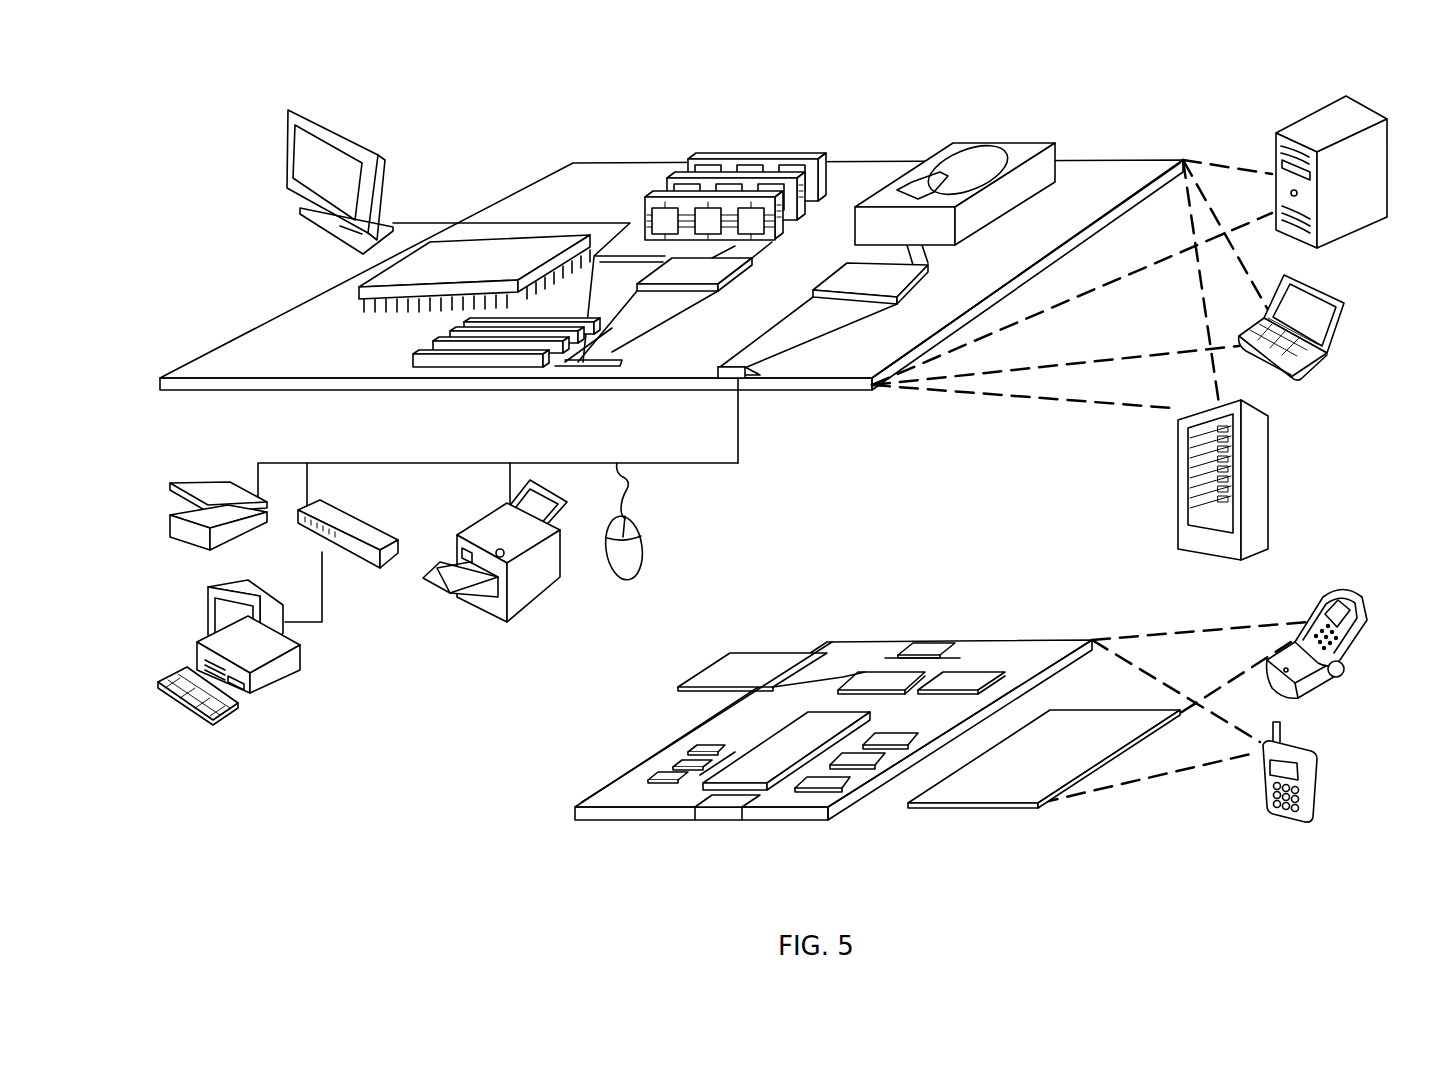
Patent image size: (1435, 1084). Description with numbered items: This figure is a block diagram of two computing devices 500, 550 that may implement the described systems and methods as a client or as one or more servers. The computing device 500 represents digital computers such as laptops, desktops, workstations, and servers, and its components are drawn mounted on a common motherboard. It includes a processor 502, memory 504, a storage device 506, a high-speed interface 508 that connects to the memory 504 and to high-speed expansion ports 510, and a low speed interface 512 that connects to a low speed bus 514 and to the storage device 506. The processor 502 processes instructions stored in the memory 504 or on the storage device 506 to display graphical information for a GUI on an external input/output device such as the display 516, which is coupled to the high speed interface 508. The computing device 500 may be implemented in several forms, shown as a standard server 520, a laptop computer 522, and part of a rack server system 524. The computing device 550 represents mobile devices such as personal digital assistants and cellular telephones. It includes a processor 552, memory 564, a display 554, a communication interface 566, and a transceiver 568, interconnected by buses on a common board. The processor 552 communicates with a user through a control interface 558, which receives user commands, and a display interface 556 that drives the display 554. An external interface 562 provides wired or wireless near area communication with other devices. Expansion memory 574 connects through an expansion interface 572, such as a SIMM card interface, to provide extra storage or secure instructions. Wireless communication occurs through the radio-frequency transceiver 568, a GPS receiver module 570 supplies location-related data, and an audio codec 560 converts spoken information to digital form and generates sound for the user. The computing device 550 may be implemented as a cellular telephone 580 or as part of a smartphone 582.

The computing device 500 is at (486, 133).
The processor 502 is at (362, 288).
The memory 504 is at (700, 160).
The storage device 506 is at (945, 143).
The high-speed interface 508 is at (672, 272).
The high-speed expansion ports 510 is at (425, 352).
The low speed interface 512 is at (853, 278).
The low speed bus 514 is at (757, 380).
The display 516 is at (292, 112).
The standard server 520 is at (1275, 147).
The laptop computer 522 is at (1345, 291).
The rack server system 524 is at (1176, 503).
The computing device 550 is at (550, 824).
The processor 552 is at (758, 775).
The display 554 is at (1005, 802).
The display interface 556 is at (827, 780).
The control interface 558 is at (862, 757).
The audio codec 560 is at (888, 737).
The external interface 562 is at (721, 820).
The memory 564 is at (668, 765).
The communication interface 566 is at (882, 678).
The transceiver 568 is at (962, 678).
The GPS receiver module 570 is at (925, 645).
The expansion interface 572 is at (810, 653).
The expansion memory 574 is at (803, 655).
The cellular telephone 580 is at (1323, 596).
The smartphone 582 is at (1264, 778).